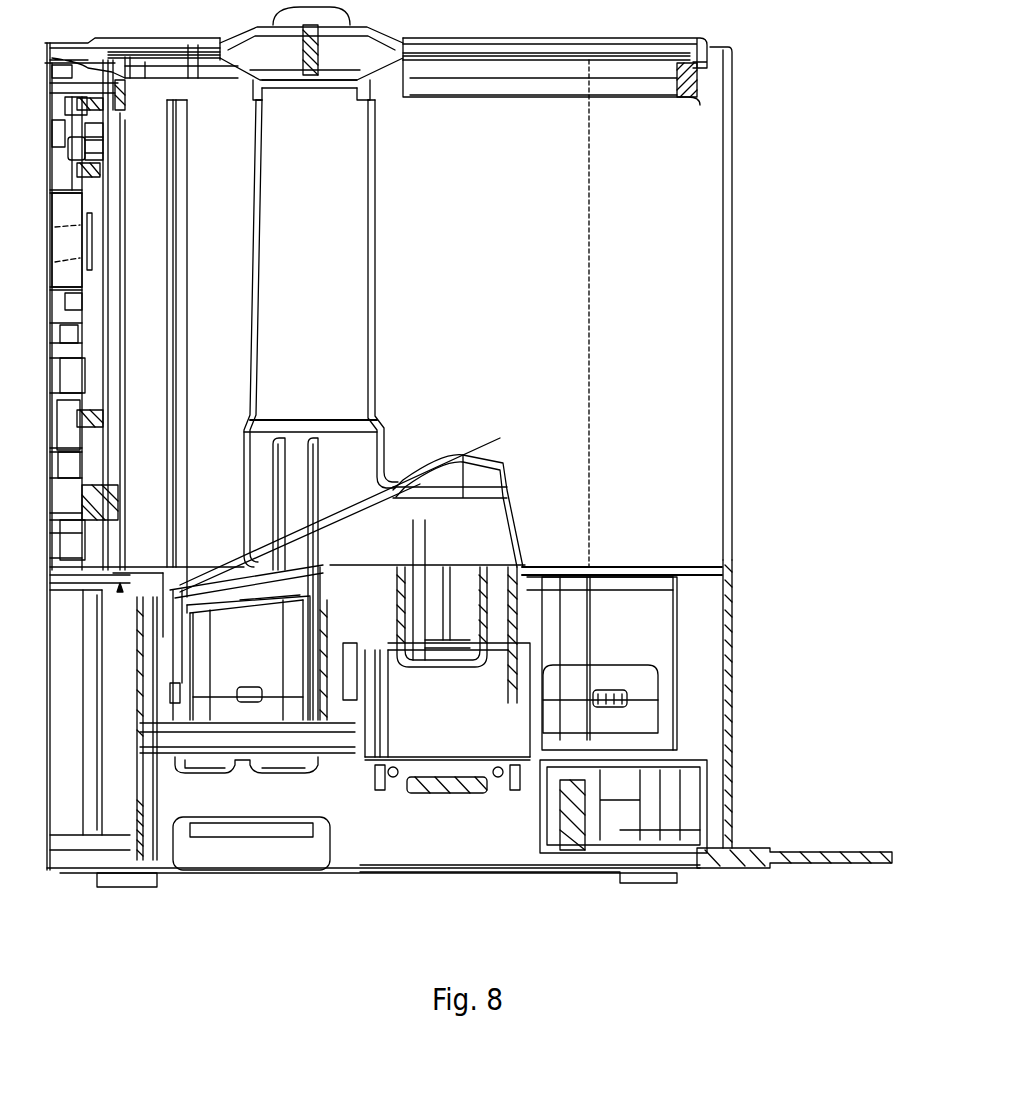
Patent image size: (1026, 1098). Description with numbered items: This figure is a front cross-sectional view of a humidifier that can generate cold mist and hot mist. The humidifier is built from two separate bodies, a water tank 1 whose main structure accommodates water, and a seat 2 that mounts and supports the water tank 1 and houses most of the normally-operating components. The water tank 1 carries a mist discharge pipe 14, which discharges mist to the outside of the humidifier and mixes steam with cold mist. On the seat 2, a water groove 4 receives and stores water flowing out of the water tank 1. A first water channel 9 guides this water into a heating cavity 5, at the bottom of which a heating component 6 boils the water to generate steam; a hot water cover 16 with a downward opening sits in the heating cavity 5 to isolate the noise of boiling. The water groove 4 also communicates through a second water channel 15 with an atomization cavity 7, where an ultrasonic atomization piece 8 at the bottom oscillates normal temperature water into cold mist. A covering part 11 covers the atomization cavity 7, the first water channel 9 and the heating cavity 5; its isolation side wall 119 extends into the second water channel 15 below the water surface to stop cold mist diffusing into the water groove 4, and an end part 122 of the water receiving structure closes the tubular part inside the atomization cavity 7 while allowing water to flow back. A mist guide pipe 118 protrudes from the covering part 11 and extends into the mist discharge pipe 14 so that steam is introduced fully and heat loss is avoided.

The water tank 1 is at (734, 296).
The seat 2 is at (735, 692).
The water groove 4 is at (630, 738).
The heating cavity 5 is at (232, 668).
The heating component 6 is at (247, 763).
The atomization cavity 7 is at (415, 728).
The ultrasonic atomization piece 8 is at (447, 797).
The first water channel 9 is at (347, 675).
The covering part 11 is at (520, 606).
The mist discharge pipe 14 is at (371, 226).
The second water channel 15 is at (513, 733).
The hot water cover 16 is at (250, 612).
The mist guide pipe 118 is at (321, 468).
The isolation side wall 119 is at (522, 665).
The end part 122 is at (470, 675).